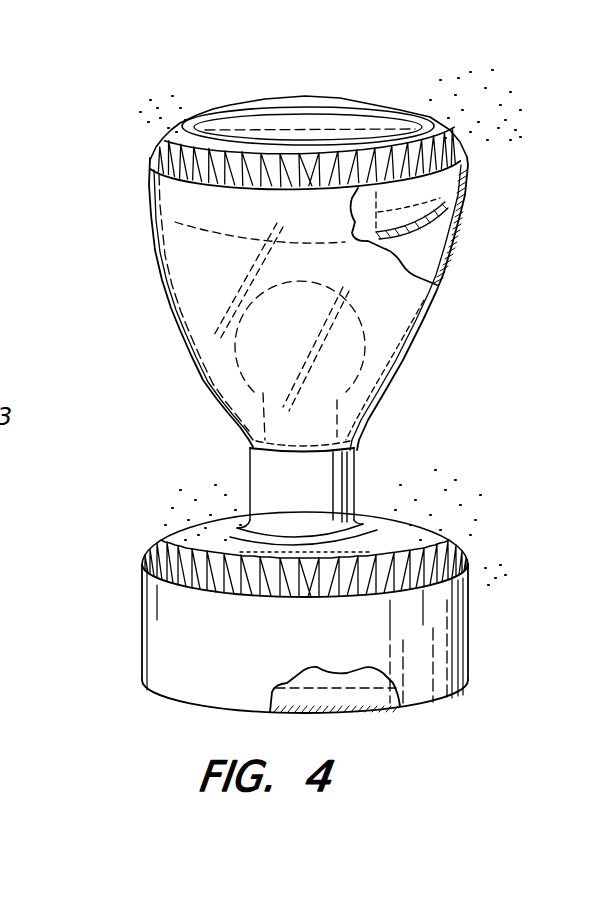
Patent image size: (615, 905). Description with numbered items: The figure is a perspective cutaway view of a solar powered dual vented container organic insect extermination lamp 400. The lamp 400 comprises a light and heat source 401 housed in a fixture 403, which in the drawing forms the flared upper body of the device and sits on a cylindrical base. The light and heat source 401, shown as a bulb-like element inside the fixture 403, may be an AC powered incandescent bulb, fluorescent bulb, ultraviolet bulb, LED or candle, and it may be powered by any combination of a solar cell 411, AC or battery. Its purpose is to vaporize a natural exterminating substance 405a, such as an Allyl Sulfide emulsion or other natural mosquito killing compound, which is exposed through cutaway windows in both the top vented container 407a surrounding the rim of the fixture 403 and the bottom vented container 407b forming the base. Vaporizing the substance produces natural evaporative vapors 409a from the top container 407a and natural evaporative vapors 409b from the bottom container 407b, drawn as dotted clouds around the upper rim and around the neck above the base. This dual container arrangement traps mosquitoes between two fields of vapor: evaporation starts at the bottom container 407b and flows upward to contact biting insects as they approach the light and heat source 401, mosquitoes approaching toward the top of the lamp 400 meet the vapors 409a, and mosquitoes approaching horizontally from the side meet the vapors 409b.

The lamp 400 is at (577, 56).
The light and heat source 401 is at (353, 366).
The fixture 403 is at (437, 298).
The natural exterminating substance 405a is at (462, 203).
The top vented container 407a is at (150, 186).
The bottom vented container 407b is at (142, 614).
The natural evaporative vapors 409a is at (502, 135).
The natural evaporative vapors 409b is at (437, 487).
The solar cell 411 is at (323, 105).